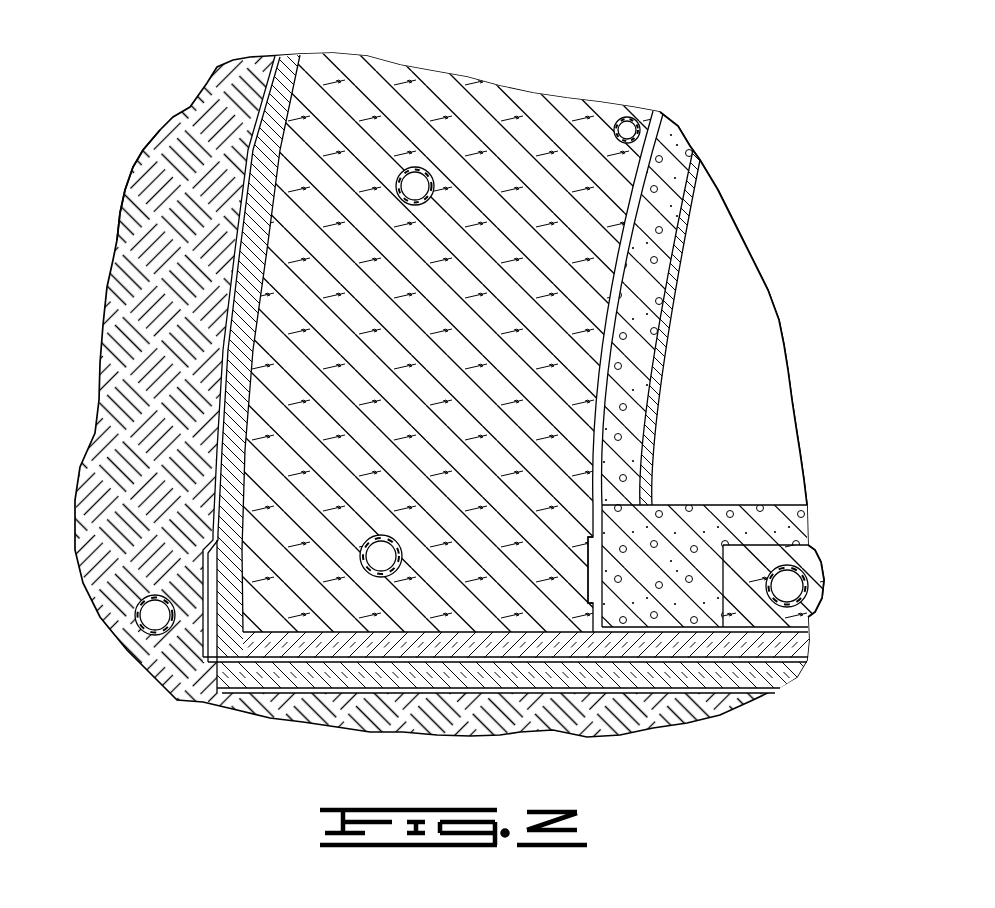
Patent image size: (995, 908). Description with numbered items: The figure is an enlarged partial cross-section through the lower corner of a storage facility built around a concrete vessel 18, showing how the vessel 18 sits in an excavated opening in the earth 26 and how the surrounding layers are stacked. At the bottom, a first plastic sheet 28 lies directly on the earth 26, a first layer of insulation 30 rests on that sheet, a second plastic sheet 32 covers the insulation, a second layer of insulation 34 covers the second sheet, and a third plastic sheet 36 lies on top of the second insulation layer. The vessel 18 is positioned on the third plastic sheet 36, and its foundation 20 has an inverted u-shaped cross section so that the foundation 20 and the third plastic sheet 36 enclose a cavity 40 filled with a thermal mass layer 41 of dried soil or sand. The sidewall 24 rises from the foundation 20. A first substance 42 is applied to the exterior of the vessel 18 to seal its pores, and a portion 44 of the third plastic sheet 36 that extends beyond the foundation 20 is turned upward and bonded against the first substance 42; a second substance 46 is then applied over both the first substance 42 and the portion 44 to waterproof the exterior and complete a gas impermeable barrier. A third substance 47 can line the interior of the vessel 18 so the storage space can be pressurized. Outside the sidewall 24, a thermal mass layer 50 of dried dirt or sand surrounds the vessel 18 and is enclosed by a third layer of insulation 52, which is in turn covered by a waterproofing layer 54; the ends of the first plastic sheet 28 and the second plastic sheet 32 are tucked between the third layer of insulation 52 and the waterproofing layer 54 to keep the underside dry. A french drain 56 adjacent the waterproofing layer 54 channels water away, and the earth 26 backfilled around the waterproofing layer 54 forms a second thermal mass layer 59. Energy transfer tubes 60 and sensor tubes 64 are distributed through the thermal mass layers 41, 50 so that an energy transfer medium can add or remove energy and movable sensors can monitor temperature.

The vessel 18 is at (688, 137).
The foundation 20 is at (720, 505).
The sidewall 24 is at (648, 312).
The earth 26 is at (163, 253).
The first plastic sheet 28 is at (243, 690).
The first layer of insulation 30 is at (583, 677).
The second plastic sheet 32 is at (693, 660).
The second layer of insulation 34 is at (740, 643).
The third plastic sheet 36 is at (767, 632).
The cavity 40 is at (767, 612).
The thermal mass layer 41 is at (808, 568).
The first substance 42 is at (607, 373).
The portion of the third plastic sheet 44 is at (595, 567).
The second substance 46 is at (617, 278).
The third substance 47 is at (672, 252).
The thermal mass layer 50 is at (487, 160).
The third layer of insulation 52 is at (230, 397).
The waterproofing layer 54 is at (220, 333).
The french drain 56 is at (135, 620).
The second thermal mass layer 59 is at (133, 297).
The energy transfer tubes 60 is at (413, 167).
The sensor tubes 64 is at (627, 118).